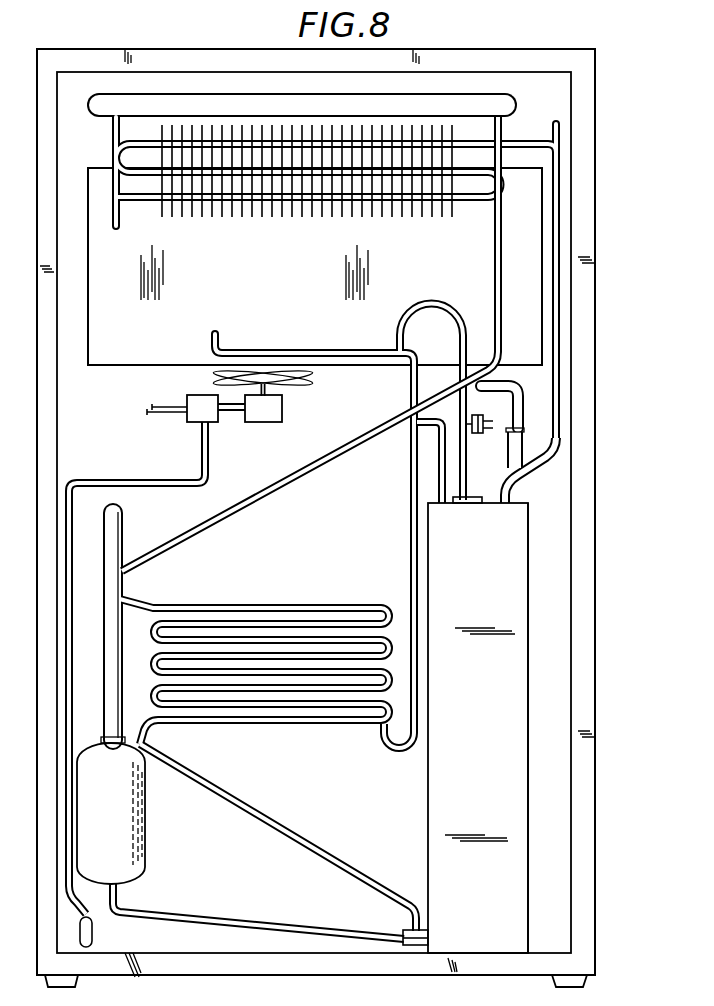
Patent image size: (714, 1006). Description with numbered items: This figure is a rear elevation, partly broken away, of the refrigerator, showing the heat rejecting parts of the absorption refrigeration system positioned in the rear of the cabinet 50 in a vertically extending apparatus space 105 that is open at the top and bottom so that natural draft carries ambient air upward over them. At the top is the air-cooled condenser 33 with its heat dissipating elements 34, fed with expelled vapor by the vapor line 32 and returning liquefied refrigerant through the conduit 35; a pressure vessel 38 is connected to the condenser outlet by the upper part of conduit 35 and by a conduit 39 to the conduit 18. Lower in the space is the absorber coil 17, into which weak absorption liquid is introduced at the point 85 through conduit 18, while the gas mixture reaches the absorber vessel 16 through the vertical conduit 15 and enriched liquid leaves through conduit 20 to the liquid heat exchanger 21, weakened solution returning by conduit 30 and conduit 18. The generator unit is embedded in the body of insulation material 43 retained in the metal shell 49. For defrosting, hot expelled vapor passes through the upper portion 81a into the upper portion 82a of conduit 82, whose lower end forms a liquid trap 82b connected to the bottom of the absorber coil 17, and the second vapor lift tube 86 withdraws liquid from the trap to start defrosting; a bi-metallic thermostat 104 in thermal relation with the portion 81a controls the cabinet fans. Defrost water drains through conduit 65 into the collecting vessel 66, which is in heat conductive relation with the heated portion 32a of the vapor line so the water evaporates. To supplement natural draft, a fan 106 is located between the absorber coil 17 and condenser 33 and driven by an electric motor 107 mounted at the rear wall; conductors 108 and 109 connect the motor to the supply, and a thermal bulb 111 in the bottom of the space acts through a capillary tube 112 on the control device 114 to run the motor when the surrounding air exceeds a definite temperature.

The vertical conduit 15 is at (107, 740).
The absorber vessel 16 is at (131, 849).
The absorber coil 17 is at (279, 607).
The conduit 18 is at (116, 588).
The conduit 20 is at (303, 928).
The liquid heat exchanger 21 is at (405, 924).
The conduit 30 is at (290, 800).
The vapor line 32 is at (552, 210).
The portion of vapor line 32a is at (548, 463).
The air-cooled condenser 33 is at (368, 200).
The heat dissipating elements 34 is at (317, 212).
The conduit 35 is at (120, 222).
The pressure vessel 38 is at (475, 103).
The conduit 39 is at (495, 249).
The body of insulation material 43 is at (498, 589).
The metal shell 49 is at (529, 551).
The cabinet 50 is at (614, 158).
The conduit 65 is at (512, 405).
The collecting vessel 66 is at (509, 448).
The upper portion of conduit 81a is at (459, 348).
The conduit 82 is at (410, 466).
The upper portion of conduit 82a is at (330, 332).
The liquid trap 82b is at (380, 749).
The level III connection 85 is at (142, 602).
The second vapor lift tube 86 is at (438, 443).
The bi-metallic thermostat 104 is at (470, 422).
The apparatus space 105 is at (373, 805).
The fan 106 is at (303, 385).
The electric motor 107 is at (278, 413).
The conductor 108 is at (173, 391).
The conductor 109 is at (152, 415).
The thermal bulb 111 is at (92, 933).
The capillary tube 112 is at (117, 481).
The control device 114 is at (210, 415).